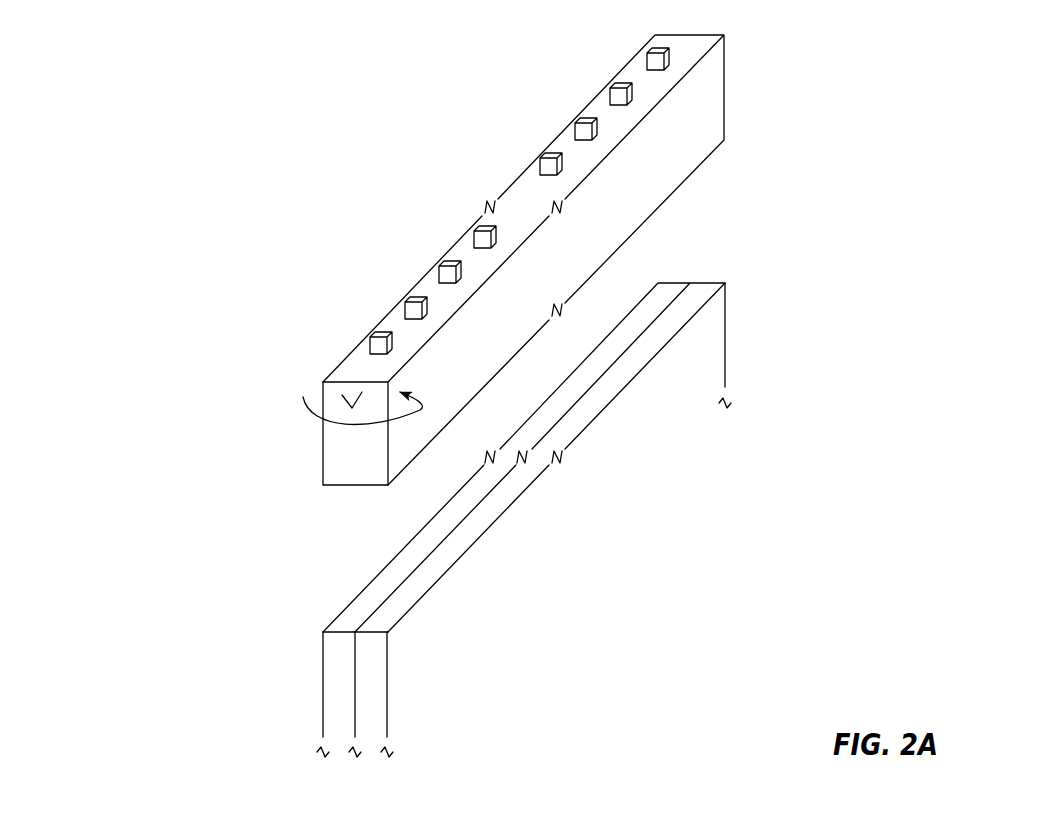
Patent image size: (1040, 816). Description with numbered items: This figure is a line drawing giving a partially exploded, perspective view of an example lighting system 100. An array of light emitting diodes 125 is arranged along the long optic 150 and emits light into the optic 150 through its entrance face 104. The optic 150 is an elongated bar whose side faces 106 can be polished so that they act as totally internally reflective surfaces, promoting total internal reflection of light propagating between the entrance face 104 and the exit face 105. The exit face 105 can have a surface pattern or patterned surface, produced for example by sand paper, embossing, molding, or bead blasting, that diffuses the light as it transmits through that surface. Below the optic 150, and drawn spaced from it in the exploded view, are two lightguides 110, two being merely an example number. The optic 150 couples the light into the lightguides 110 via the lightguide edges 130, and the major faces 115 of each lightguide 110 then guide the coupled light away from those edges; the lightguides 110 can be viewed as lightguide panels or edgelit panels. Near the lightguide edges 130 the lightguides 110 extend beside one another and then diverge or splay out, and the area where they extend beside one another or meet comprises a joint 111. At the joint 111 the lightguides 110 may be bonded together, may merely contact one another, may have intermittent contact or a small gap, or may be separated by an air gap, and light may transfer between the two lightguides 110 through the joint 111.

The lighting system 100 is at (880, 112).
The entrance face 104 is at (643, 80).
The exit face 105 is at (352, 495).
The side faces 106 is at (317, 380).
The lightguides 110 is at (335, 718).
The joint 111 is at (588, 395).
The major faces 115 is at (606, 555).
The array of light emitting diodes 125 is at (513, 173).
The lightguide edges 130 is at (398, 558).
The optic 150 is at (699, 152).